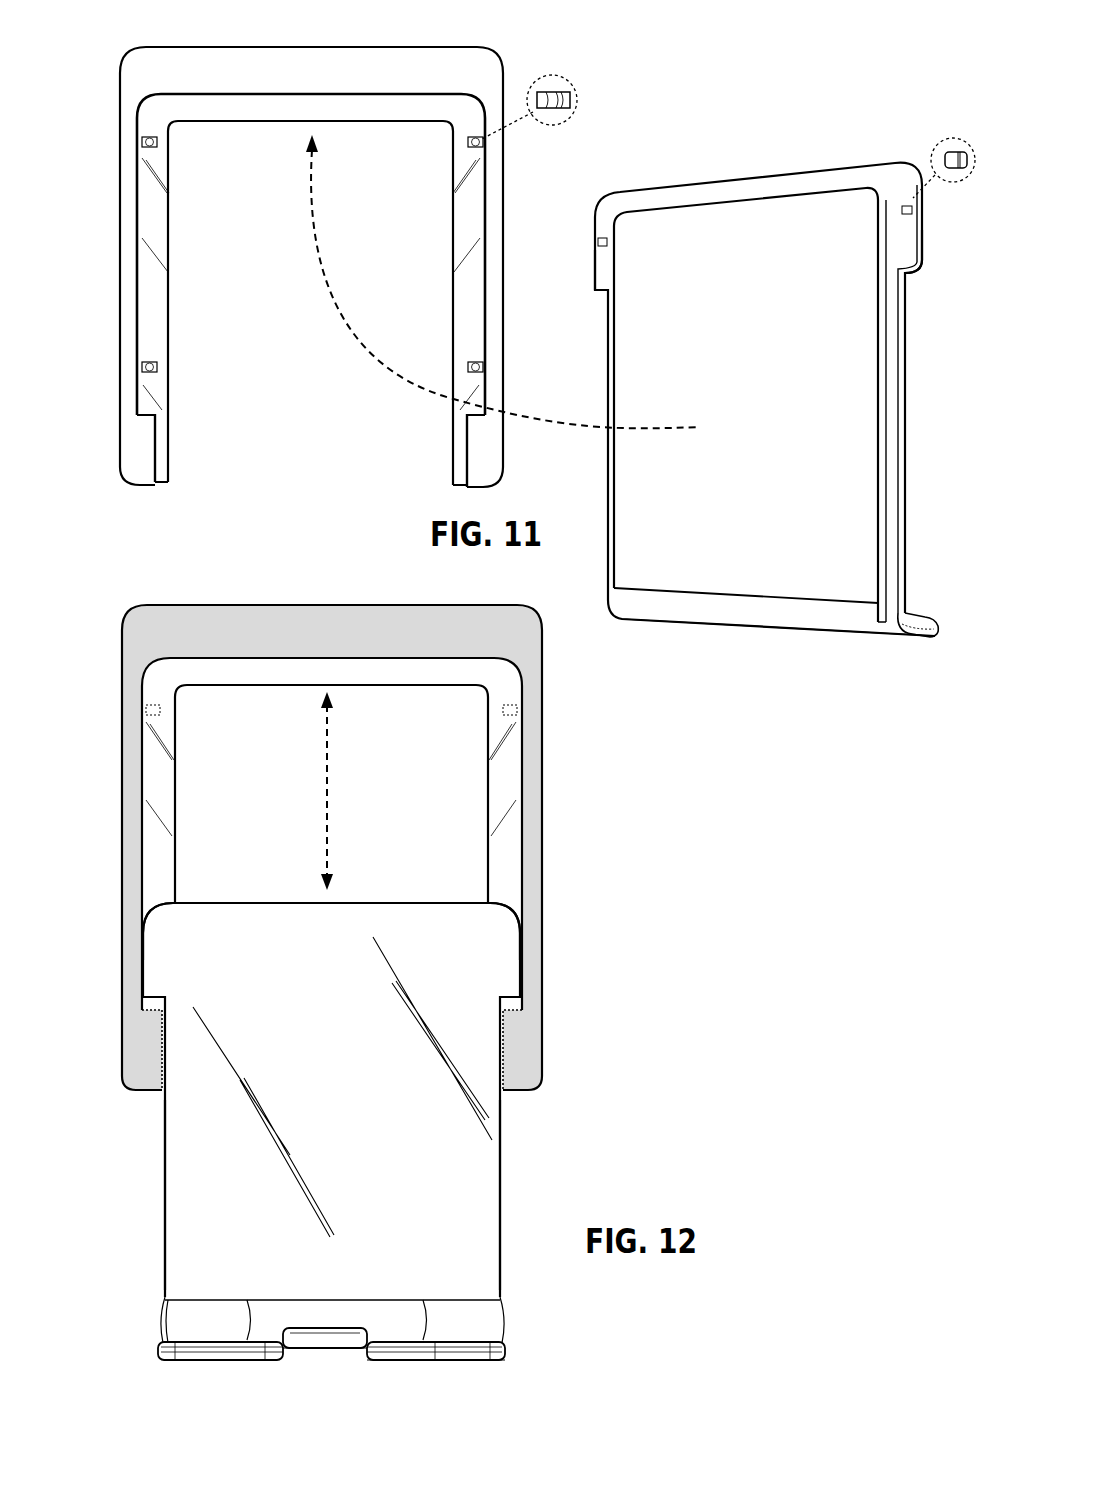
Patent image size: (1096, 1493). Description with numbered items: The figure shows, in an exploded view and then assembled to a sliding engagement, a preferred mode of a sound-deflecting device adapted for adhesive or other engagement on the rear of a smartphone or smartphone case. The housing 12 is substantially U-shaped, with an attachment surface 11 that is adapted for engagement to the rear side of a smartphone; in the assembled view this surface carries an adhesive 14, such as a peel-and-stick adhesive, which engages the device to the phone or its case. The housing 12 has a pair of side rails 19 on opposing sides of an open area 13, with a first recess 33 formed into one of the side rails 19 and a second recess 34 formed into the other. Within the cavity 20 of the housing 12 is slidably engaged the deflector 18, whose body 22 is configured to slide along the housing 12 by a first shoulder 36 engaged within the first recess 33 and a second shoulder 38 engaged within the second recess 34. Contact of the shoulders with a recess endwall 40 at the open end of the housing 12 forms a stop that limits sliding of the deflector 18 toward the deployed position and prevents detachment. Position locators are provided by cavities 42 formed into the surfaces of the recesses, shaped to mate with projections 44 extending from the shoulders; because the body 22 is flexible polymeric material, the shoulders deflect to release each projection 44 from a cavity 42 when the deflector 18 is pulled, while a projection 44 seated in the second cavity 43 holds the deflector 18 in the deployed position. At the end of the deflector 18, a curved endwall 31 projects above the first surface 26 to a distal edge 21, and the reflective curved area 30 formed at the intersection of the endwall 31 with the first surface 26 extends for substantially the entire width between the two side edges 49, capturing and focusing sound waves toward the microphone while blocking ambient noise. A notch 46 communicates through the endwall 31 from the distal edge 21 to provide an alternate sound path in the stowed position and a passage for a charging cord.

In FIG. 11, the attachment surface 11 is at (311, 271).
In FIG. 11, the housing 12 is at (120, 78).
In FIG. 11, the open area 13 is at (311, 303).
In FIG. 12, the adhesive 14 is at (523, 640).
In FIG. 12, the sound deflector 18 is at (179, 1215).
In FIG. 11, the side rails 19 is at (130, 223).
In FIG. 12, the side rails 19 is at (140, 740).
In FIG. 11, the cavity 20 is at (193, 470).
In FIG. 12, the cavity 20 is at (193, 857).
In FIG. 11, the distal edge 21 is at (932, 618).
In FIG. 12, the distal edge 21 is at (503, 1363).
In FIG. 11, the body 22 is at (750, 218).
In FIG. 12, the first surface 26 is at (331, 1100).
In FIG. 11, the reflective curved area 30 is at (910, 610).
In FIG. 12, the reflective curved area 30 is at (331, 1328).
In FIG. 11, the endwall 31 is at (920, 642).
In FIG. 12, the endwall 31 is at (503, 1330).
In FIG. 11, the first recess 33 is at (145, 217).
In FIG. 12, the first recess 33 is at (163, 783).
In FIG. 11, the second recess 34 is at (467, 212).
In FIG. 12, the second recess 34 is at (505, 805).
In FIG. 11, the first shoulder 36 is at (905, 248).
In FIG. 12, the first shoulder 36 is at (158, 952).
In FIG. 11, the second shoulder 38 is at (602, 272).
In FIG. 12, the second shoulder 38 is at (505, 960).
In FIG. 11, the recess endwall 40 is at (150, 413).
In FIG. 12, the recess endwall 40 is at (150, 1008).
In FIG. 11, the cavities 42 is at (570, 90).
In FIG. 11, the second cavity 43 is at (468, 366).
In FIG. 11, the projections 44 is at (957, 153).
In FIG. 12, the notch 46 is at (315, 1355).
In FIG. 11, the side edges 49 is at (905, 433).
In FIG. 12, the side edges 49 is at (163, 1173).